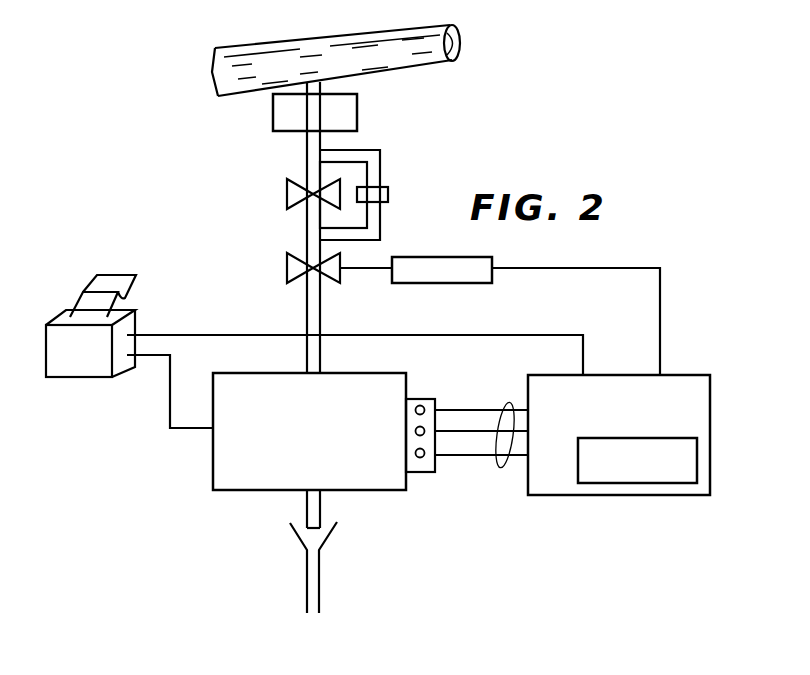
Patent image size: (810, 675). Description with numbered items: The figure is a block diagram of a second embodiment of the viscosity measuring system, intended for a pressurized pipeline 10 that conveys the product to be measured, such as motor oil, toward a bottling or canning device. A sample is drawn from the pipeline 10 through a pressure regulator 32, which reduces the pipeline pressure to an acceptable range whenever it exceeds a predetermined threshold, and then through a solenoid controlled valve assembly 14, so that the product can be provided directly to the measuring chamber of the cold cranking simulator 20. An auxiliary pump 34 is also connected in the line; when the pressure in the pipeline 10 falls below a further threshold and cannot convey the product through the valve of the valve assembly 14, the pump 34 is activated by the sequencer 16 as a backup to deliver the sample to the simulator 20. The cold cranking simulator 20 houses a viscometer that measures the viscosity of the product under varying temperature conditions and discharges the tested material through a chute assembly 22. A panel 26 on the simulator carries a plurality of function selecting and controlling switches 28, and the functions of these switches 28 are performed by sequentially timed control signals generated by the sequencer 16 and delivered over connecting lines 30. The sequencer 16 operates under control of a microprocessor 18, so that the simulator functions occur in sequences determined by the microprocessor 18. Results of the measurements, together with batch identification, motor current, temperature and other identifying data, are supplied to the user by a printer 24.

The pipeline 10 is at (438, 65).
The solenoid controlled valve assembly 14 is at (353, 280).
The sequencer 16 is at (665, 375).
The microprocessor 18 is at (583, 438).
The cold cranking simulator 20 is at (365, 373).
The chute assembly 22 is at (287, 530).
The printer 24 is at (46, 325).
The panel 26 is at (423, 472).
The function selecting and controlling switches 28 is at (443, 414).
The connecting lines 30 is at (500, 467).
The pressure regulator 32 is at (350, 147).
The auxiliary pump 34 is at (272, 110).